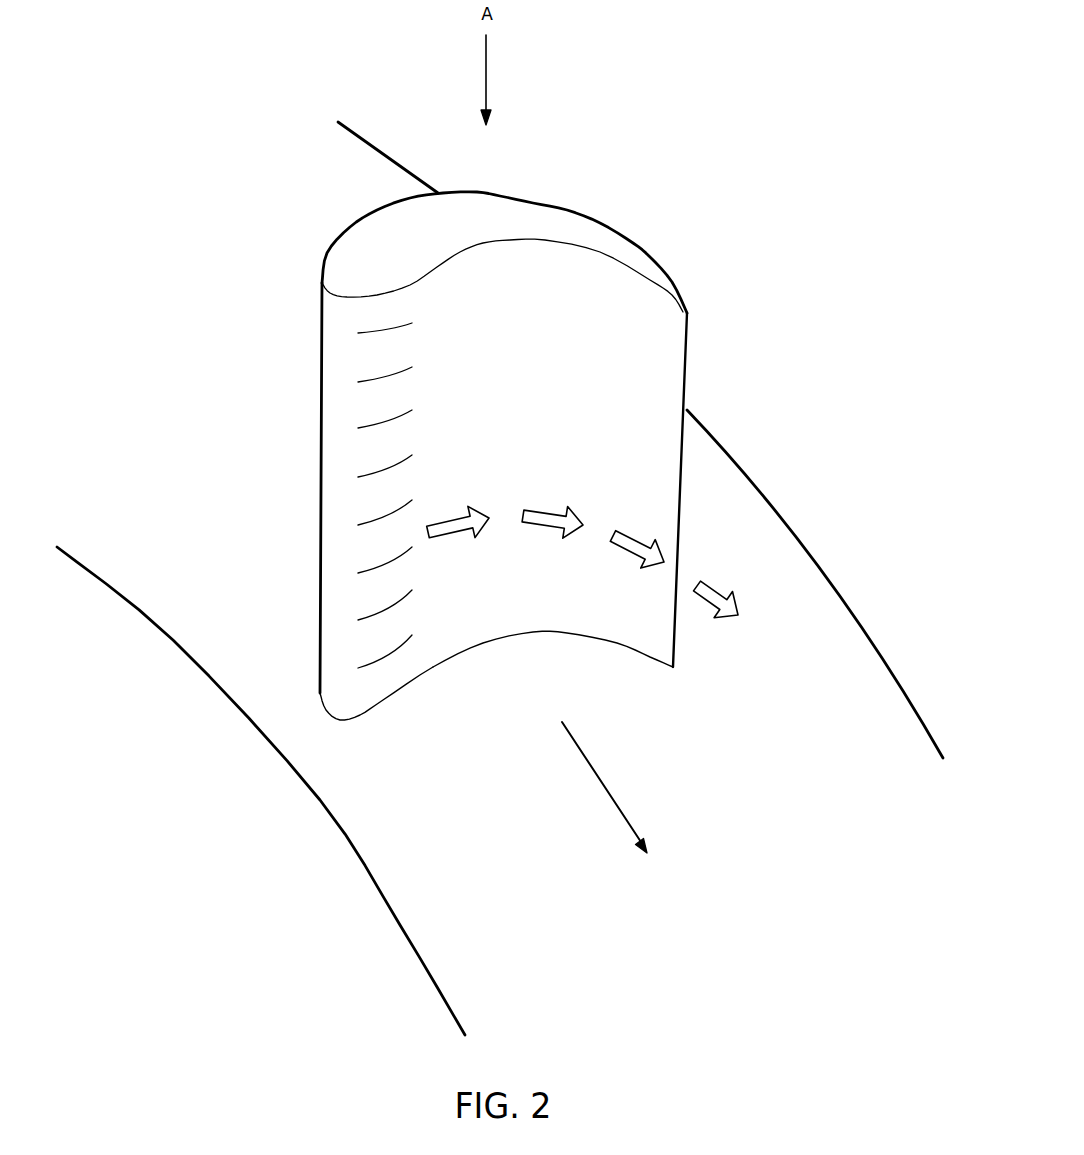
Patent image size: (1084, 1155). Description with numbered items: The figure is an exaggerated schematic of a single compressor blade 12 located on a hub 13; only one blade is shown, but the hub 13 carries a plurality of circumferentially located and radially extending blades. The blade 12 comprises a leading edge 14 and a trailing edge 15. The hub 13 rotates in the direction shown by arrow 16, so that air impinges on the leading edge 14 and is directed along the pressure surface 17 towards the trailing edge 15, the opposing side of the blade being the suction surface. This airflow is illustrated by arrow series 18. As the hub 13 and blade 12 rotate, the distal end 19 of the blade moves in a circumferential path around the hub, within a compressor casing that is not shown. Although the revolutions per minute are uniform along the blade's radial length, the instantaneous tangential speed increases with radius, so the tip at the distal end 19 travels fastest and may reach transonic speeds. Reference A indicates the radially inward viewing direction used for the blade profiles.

The compressor blade 12 is at (642, 248).
The hub 13 is at (785, 553).
The leading edge 14 is at (340, 693).
The trailing edge 15 is at (687, 400).
The arrow 16 is at (627, 815).
The pressure surface 17 is at (460, 593).
The arrow series 18 is at (728, 620).
The distal end 19 is at (522, 215).